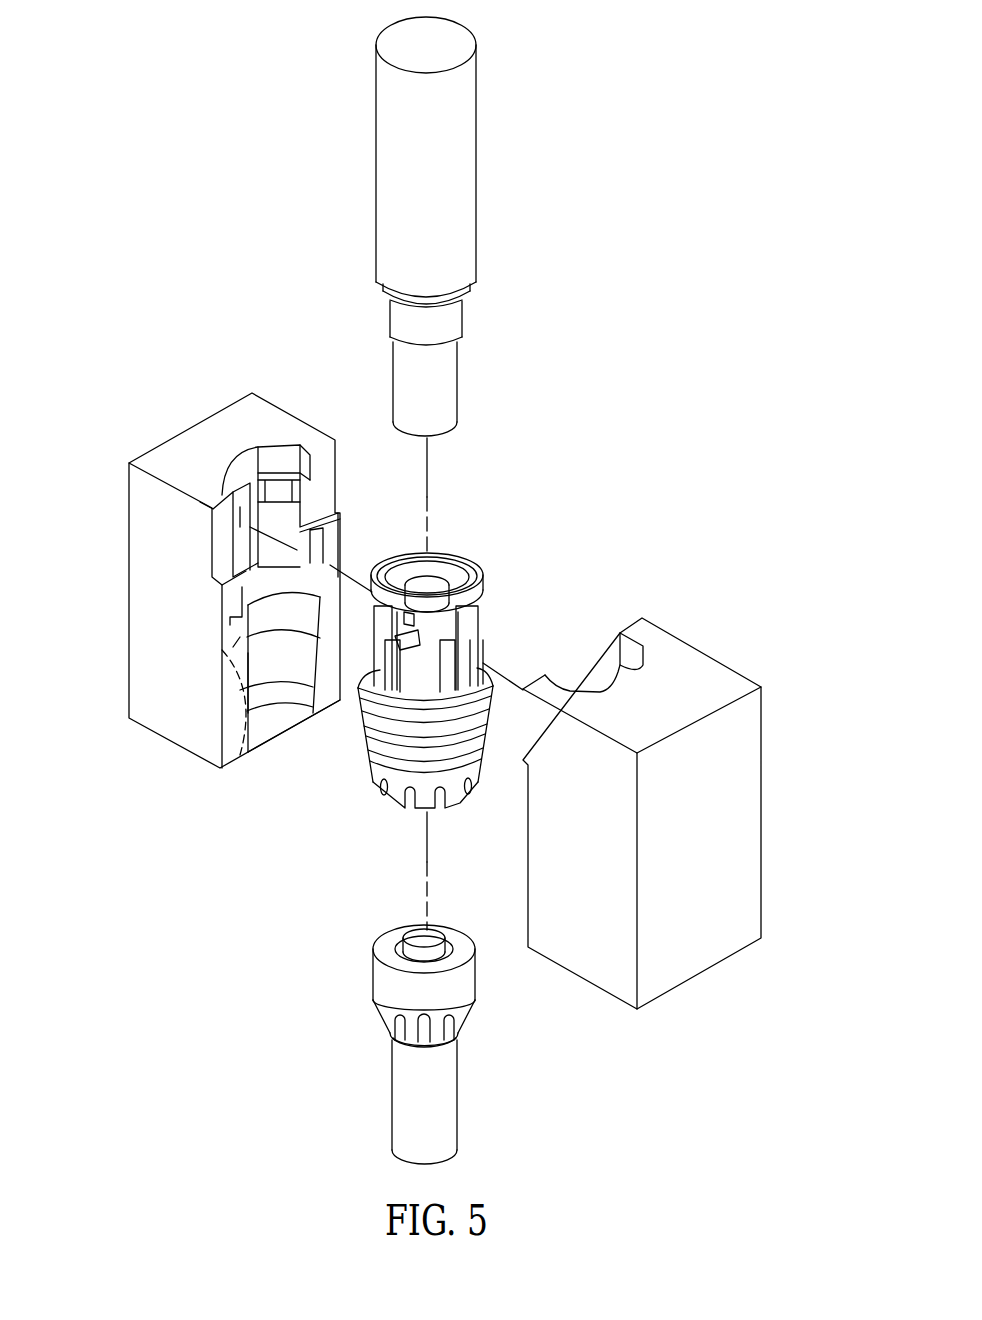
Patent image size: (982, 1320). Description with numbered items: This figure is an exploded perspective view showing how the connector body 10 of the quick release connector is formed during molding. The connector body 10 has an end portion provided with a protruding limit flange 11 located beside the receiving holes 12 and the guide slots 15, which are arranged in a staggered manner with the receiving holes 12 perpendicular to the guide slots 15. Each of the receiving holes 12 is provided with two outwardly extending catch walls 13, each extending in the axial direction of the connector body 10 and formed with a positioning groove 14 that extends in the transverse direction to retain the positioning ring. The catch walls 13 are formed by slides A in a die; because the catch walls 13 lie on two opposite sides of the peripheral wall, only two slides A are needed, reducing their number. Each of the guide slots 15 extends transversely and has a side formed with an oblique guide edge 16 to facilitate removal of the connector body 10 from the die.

The connector body 10 is at (408, 658).
The limit flange 11 is at (438, 552).
The receiving holes 12 is at (483, 620).
The catch walls 13 is at (463, 797).
The positioning groove 14 is at (507, 653).
The guide slots 15 is at (343, 700).
The oblique guide edge 16 is at (404, 612).
The slides A is at (162, 408).